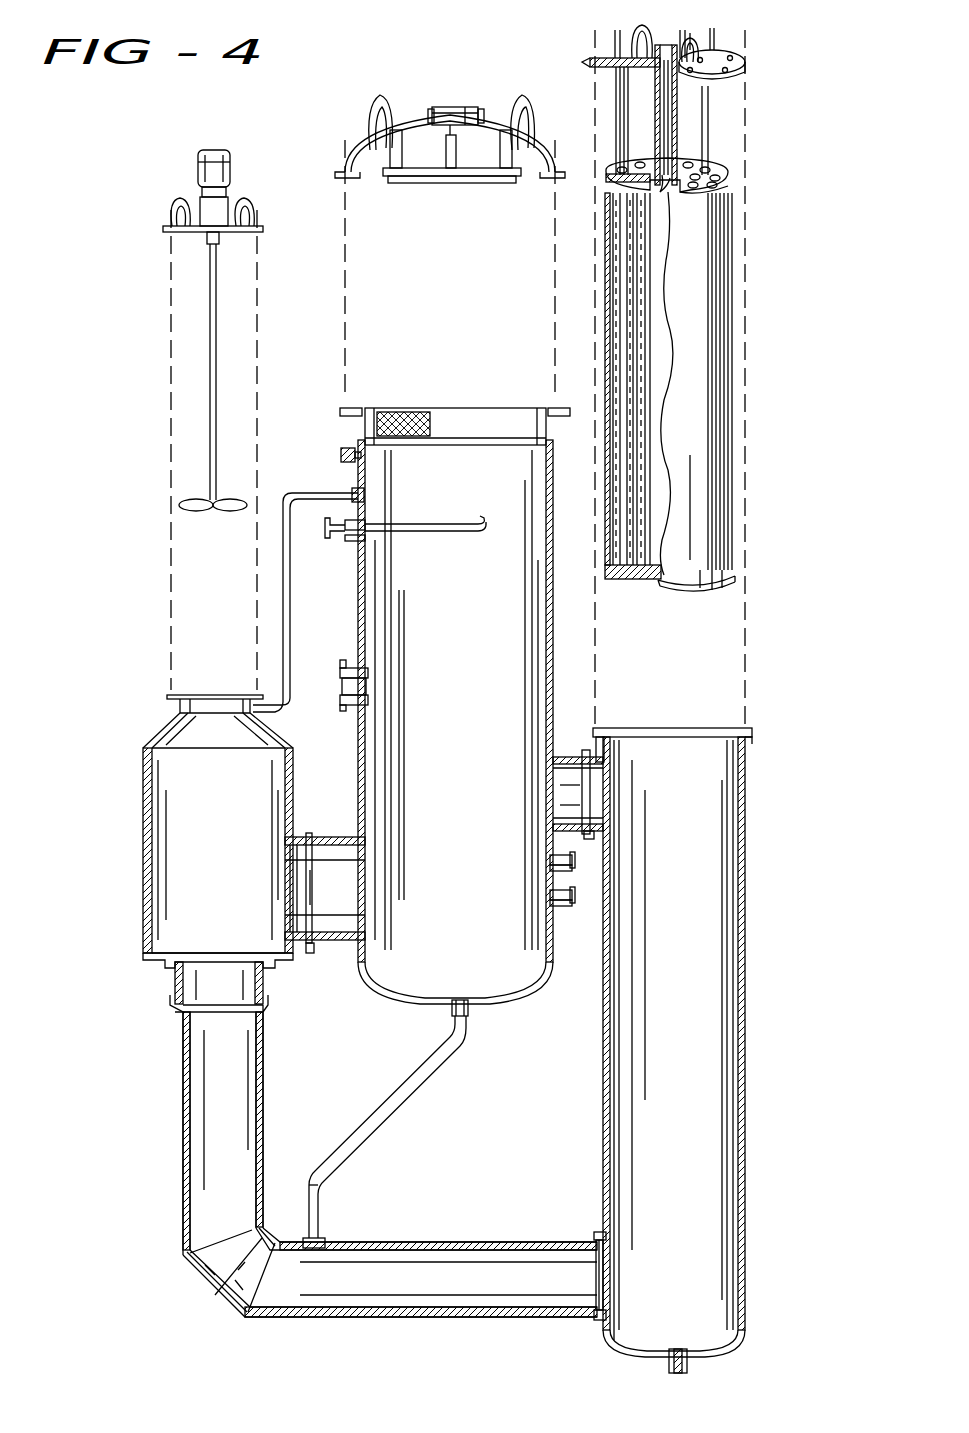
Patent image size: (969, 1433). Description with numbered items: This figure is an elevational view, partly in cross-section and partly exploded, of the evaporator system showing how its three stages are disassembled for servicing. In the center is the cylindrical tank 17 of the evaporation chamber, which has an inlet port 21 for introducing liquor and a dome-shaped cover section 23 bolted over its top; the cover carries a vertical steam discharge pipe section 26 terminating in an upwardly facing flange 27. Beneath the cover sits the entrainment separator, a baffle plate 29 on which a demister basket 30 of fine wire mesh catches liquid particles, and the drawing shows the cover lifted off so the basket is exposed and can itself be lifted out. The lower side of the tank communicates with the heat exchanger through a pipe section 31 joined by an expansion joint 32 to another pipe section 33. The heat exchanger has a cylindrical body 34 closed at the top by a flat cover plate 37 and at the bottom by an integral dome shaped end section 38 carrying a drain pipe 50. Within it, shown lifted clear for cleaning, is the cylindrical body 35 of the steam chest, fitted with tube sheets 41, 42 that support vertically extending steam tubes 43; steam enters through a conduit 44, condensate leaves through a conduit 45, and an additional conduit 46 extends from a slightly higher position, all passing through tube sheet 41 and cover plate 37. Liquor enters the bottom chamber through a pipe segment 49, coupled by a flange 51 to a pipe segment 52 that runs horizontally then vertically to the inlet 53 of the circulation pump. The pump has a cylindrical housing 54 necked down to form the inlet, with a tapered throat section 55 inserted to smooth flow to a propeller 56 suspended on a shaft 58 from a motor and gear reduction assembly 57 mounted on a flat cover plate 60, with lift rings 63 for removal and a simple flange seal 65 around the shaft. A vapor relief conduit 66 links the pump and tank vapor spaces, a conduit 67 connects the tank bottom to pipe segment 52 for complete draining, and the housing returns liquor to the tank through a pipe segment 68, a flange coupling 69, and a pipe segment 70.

The cylindrical tank 17 is at (552, 632).
The inlet port 21 is at (572, 868).
The dome-shaped cover section 23 is at (540, 130).
The steam discharge pipe section 26 is at (480, 108).
The upwardly facing flange 27 is at (433, 105).
The baffle plate 29 is at (368, 405).
The demister basket 30 is at (470, 425).
The pipe section 31 is at (568, 757).
The expansion joint 32 is at (588, 839).
The pipe section 33 is at (600, 745).
The cylindrical body 34 is at (745, 860).
The cylindrical body of steam chest 35 is at (720, 228).
The flat cover plate 37 is at (744, 82).
The dome shaped end section 38 is at (628, 1345).
The tube sheet 41 is at (726, 172).
The tube sheet 42 is at (720, 582).
The steam tubes 43 is at (640, 258).
The conduit 44 is at (668, 132).
The conduit 45 is at (629, 95).
The conduit 46 is at (710, 110).
The pipe segment 49 is at (600, 1236).
The drain pipe 50 is at (688, 1362).
The flange 51 is at (596, 1320).
The pipe segment 52 is at (430, 1242).
The inlet 53 is at (178, 998).
The cylindrical housing 54 is at (143, 920).
The throat section 55 is at (262, 992).
The propeller 56 is at (231, 500).
The motor and gear reduction assembly 57 is at (228, 172).
The shaft 58 is at (213, 395).
The flat cover plate 60 is at (263, 229).
The lift rings 63 is at (173, 214).
The flange seal 65 is at (218, 238).
The vapor relief conduit 66 is at (286, 575).
The conduit 67 is at (408, 1083).
The pipe segment 68 is at (300, 835).
The flange coupling 69 is at (313, 953).
The pipe segment 70 is at (318, 840).